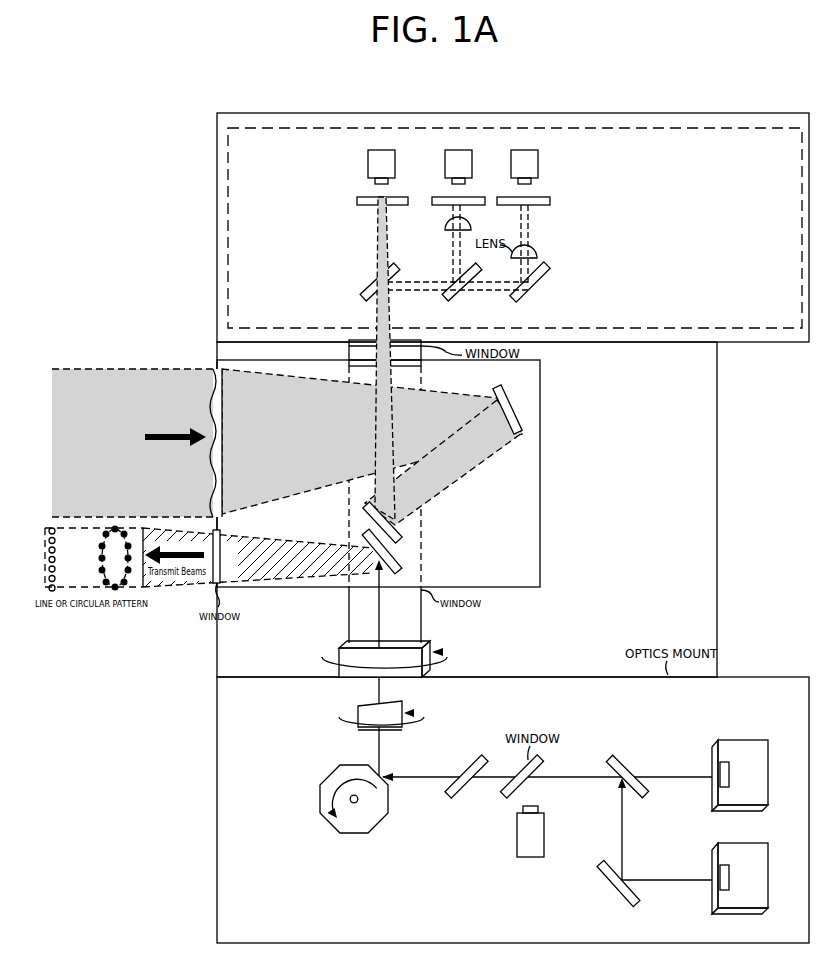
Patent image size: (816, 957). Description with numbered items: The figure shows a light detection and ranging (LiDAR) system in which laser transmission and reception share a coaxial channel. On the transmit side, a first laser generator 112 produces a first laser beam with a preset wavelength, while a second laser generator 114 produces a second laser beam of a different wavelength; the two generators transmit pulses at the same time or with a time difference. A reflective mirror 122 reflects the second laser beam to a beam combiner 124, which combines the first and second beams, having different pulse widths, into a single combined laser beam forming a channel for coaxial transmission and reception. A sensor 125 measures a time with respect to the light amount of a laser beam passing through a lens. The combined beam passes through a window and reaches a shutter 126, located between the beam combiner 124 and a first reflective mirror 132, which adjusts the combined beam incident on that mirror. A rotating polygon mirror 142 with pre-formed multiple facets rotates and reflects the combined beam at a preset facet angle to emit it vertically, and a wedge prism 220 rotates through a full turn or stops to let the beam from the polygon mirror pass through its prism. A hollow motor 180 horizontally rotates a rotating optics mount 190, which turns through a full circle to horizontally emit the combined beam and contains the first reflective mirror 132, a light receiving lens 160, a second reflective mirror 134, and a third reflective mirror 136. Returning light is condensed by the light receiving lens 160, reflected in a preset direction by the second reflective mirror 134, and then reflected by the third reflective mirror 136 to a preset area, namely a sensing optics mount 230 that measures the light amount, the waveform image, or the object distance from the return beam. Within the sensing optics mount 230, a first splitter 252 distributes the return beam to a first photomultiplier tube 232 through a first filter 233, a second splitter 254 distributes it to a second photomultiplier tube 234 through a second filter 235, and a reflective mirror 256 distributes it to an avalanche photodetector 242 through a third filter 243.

The sensing optics mount 230 is at (323, 151).
The first photomultiplier tube 232 is at (392, 175).
The first filter 233 is at (364, 191).
The second photomultiplier tube 234 is at (469, 175).
The second filter 235 is at (440, 191).
The avalanche photodetector 242 is at (534, 175).
The third filter 243 is at (505, 191).
The first splitter 252 is at (363, 287).
The second splitter 254 is at (450, 277).
The reflective mirror 256 is at (517, 277).
The light receiving lens 160 is at (182, 429).
The second reflective mirror 134 is at (532, 401).
The rotating optics mount 190 is at (572, 476).
The third reflective mirror 136 is at (372, 530).
The first reflective mirror 132 is at (418, 559).
The hollow motor 180 is at (315, 662).
The wedge prism 220 is at (327, 726).
The rotating polygon mirror 142 is at (308, 808).
The shutter 126 is at (460, 768).
The beam combiner 124 is at (657, 771).
The first laser generator 112 is at (757, 785).
The sensor 125 is at (540, 848).
The reflective mirror 122 is at (652, 875).
The second laser generator 114 is at (757, 887).